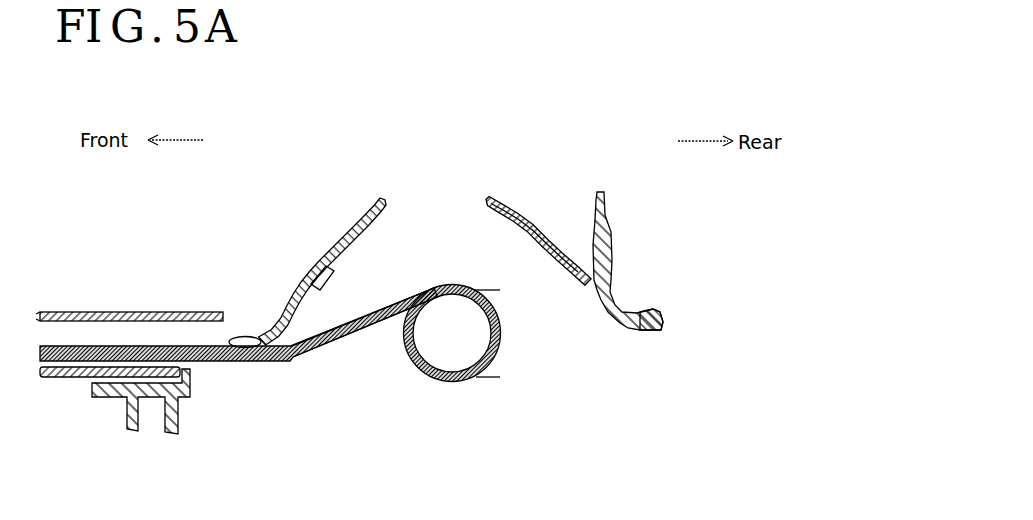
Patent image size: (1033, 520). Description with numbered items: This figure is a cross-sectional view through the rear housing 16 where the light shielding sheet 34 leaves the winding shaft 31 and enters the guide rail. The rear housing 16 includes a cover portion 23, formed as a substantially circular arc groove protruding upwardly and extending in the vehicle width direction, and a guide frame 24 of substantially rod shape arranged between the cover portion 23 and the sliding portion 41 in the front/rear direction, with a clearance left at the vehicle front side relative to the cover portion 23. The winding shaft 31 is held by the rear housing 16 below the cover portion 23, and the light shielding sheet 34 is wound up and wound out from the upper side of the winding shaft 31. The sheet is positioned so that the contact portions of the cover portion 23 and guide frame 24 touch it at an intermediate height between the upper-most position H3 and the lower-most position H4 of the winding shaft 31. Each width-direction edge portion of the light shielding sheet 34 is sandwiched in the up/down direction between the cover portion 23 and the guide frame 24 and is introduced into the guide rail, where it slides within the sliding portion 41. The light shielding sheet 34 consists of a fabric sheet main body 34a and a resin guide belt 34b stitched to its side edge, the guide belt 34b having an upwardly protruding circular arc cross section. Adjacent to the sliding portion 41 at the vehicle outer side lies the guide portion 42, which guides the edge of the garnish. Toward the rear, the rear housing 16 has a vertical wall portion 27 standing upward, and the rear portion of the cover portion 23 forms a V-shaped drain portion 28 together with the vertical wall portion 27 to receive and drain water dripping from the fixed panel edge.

The rear housing 16 is at (643, 333).
The cover portion 23 is at (320, 251).
The guide frame 24 is at (180, 410).
The vertical wall portion 27 is at (608, 228).
The drain portion 28 is at (545, 228).
The winding shaft 31 is at (446, 299).
The light shielding sheet 34 is at (353, 338).
The sheet main body 34a is at (356, 324).
The guide belt 34b is at (283, 361).
The sliding portion 41 is at (68, 378).
The guide portion 42 is at (139, 325).
The upper-most position H3 is at (474, 290).
The lower-most position H4 is at (476, 377).